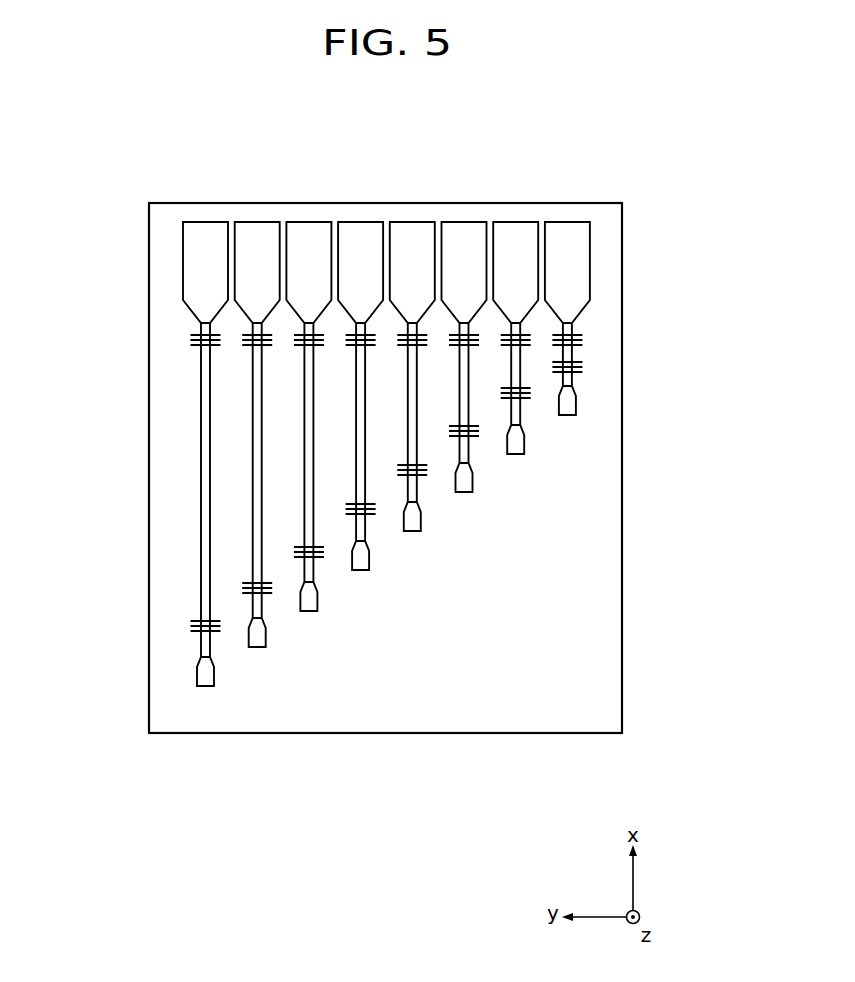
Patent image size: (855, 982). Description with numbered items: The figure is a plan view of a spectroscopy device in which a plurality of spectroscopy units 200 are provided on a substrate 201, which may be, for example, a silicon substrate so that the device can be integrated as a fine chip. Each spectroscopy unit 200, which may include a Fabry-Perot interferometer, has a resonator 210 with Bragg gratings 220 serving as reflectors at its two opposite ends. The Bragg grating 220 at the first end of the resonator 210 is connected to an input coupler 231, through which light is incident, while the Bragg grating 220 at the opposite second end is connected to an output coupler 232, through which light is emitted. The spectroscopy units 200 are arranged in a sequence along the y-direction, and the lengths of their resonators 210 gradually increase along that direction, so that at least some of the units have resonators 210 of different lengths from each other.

The spectroscopy unit 200 is at (207, 212).
The substrate 201 is at (607, 473).
The resonator 210 is at (192, 466).
The Bragg grating 220 is at (178, 340).
The input coupler 231 is at (178, 268).
The output coupler 232 is at (185, 673).